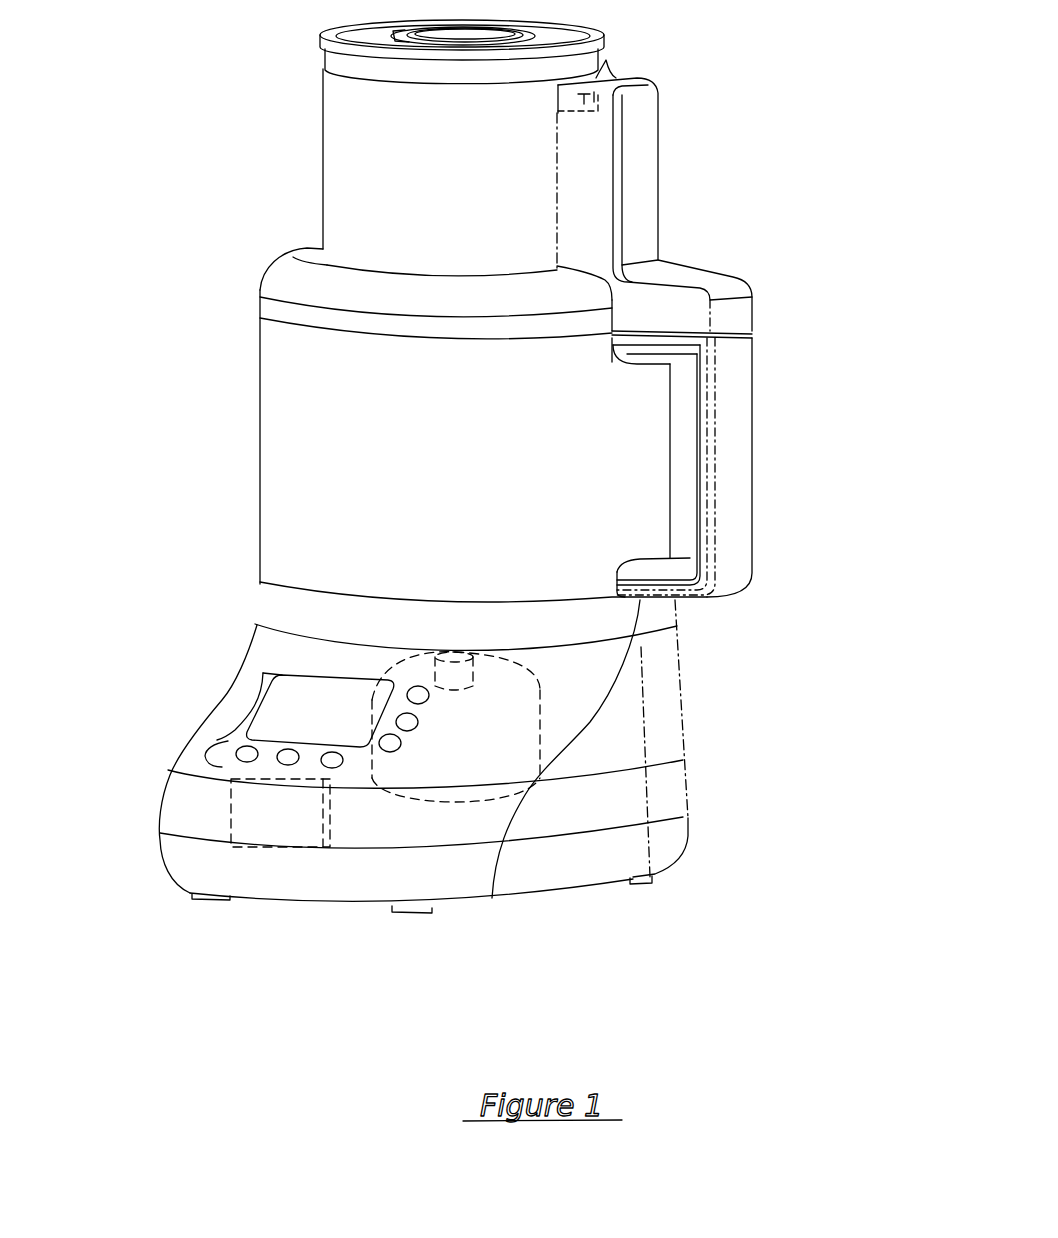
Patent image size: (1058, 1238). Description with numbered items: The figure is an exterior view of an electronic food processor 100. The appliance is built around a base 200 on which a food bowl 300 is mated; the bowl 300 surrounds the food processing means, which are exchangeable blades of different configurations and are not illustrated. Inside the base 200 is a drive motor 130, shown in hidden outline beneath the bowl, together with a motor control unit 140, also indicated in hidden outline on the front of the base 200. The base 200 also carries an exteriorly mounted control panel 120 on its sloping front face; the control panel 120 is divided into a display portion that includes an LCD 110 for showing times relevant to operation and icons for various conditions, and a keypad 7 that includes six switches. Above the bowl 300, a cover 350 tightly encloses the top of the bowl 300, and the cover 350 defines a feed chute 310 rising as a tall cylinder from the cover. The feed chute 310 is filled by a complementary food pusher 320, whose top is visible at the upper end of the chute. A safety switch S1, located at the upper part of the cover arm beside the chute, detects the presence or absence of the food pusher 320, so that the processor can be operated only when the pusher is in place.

The electronic food processor 100 is at (276, 212).
The LCD 110 is at (292, 710).
The control panel 120 is at (232, 745).
The keypad 7 is at (233, 748).
The drive motor 130 is at (460, 745).
The motor control unit 140 is at (268, 822).
The base 200 is at (658, 848).
The bowl 300 is at (733, 455).
The feed chute 310 is at (520, 113).
The food pusher 320 is at (600, 38).
The cover 350 is at (640, 216).
The safety switch S1 is at (598, 97).